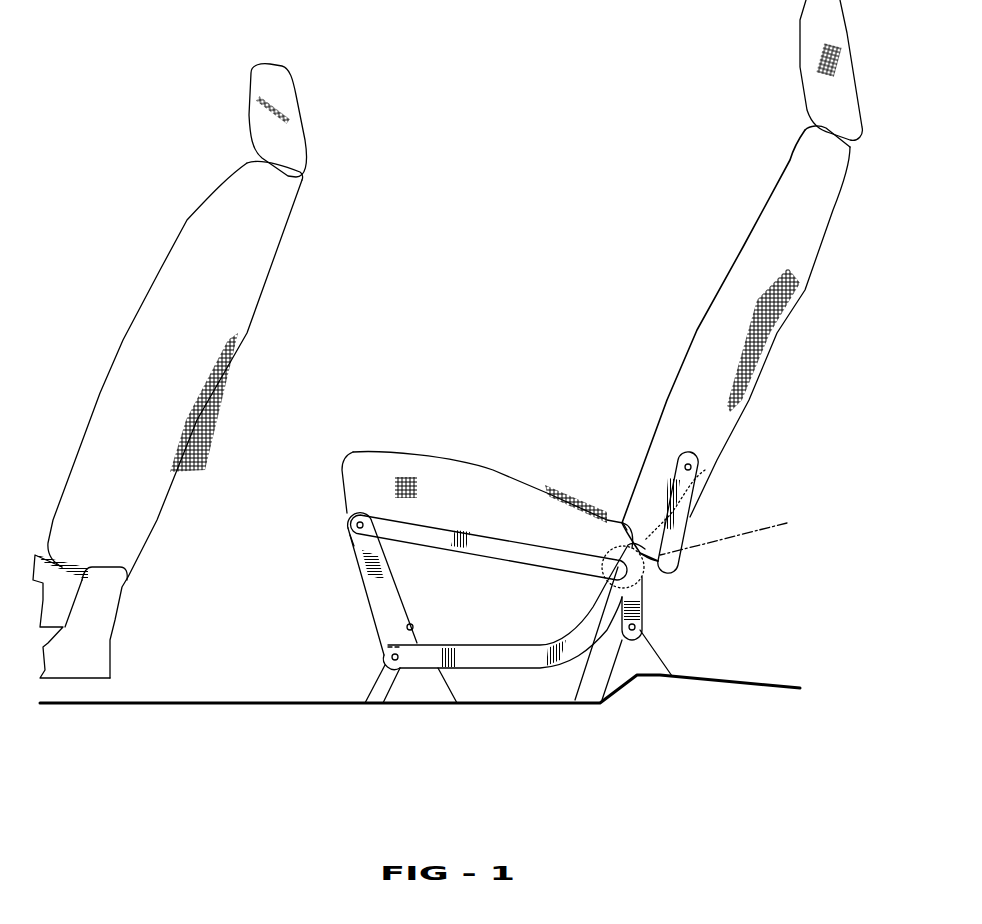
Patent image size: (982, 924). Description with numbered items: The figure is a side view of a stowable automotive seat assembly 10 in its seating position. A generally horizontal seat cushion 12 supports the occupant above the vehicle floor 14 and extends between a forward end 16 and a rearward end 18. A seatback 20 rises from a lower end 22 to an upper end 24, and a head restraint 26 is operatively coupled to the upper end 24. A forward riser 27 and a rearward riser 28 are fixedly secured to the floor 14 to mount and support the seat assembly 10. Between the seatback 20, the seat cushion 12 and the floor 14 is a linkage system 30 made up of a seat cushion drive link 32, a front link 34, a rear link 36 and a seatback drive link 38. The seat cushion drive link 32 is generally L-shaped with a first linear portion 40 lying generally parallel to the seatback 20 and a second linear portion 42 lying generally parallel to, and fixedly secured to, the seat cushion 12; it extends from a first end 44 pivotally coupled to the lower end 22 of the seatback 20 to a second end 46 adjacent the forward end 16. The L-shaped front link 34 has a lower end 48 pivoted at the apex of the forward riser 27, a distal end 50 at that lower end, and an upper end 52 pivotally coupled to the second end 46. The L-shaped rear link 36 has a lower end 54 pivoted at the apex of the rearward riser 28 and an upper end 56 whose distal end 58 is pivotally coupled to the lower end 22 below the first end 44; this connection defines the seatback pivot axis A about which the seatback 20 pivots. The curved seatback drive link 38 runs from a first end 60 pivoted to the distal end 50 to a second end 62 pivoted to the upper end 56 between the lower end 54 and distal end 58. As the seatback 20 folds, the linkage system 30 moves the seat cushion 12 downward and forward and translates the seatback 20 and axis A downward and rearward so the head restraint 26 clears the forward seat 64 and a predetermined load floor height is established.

The seat assembly 10 is at (516, 304).
The seat cushion 12 is at (464, 471).
The floor 14 is at (190, 702).
The forward end 16 is at (352, 463).
The rearward end 18 is at (560, 493).
The seatback 20 is at (748, 280).
The lower end 22 is at (640, 500).
The upper end 24 is at (810, 205).
The head restraint 26 is at (800, 66).
The forward riser 27 is at (368, 683).
The rearward riser 28 is at (657, 658).
The linkage system 30 is at (278, 556).
The seat cushion drive link 32 is at (452, 521).
The front link 34 is at (373, 636).
The rear link 36 is at (694, 598).
The seatback drive link 38 is at (490, 657).
The first linear portion 40 is at (728, 500).
The second linear portion 42 is at (506, 553).
The first end 44 is at (700, 464).
The second end 46 is at (357, 520).
The lower end 48 is at (412, 626).
The distal end 50 is at (395, 644).
The upper end 52 is at (367, 543).
The lower end 54 is at (643, 623).
The upper end 56 is at (665, 554).
The distal end 58 is at (690, 509).
The first end 60 is at (357, 682).
The second end 62 is at (610, 576).
The forward seat 64 is at (256, 332).
The seatback pivot axis A is at (734, 535).